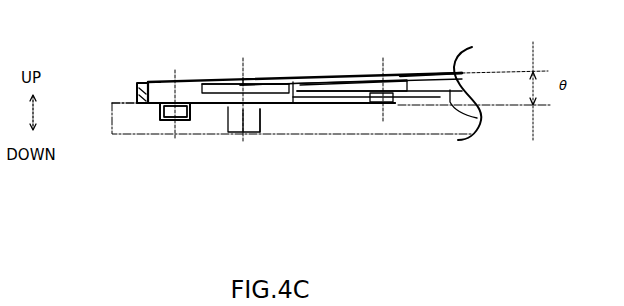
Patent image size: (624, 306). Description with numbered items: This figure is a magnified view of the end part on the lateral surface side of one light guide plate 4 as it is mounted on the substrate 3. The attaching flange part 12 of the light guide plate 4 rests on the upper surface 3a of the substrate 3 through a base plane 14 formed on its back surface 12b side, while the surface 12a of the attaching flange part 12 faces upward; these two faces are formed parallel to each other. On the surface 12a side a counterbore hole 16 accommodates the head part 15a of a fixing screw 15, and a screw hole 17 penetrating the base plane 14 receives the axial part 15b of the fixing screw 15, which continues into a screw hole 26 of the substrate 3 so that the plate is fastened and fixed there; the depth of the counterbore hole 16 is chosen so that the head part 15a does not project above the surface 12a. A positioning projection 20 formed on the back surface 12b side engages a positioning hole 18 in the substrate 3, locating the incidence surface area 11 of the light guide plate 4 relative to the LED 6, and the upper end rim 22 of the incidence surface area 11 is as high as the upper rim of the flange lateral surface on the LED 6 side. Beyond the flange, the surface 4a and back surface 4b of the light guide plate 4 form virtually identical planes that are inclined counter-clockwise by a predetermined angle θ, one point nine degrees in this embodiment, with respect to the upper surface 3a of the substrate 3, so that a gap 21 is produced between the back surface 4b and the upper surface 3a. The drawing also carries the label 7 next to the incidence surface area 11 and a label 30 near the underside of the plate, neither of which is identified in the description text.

The substrate 3 is at (137, 135).
The upper surface of substrate 3a is at (114, 100).
The light guide plate 4 is at (415, 73).
The surface of light guide plate 4a is at (432, 73).
The back surface of light guide plate 4b is at (483, 118).
The LED 6 is at (136, 96).
The housing 7 is at (136, 90).
The incidence surface area 11 is at (235, 77).
The attaching flange part 12 is at (308, 88).
The surface of attaching flange part 12a is at (353, 76).
The back surface of attaching flange part 12b is at (294, 105).
The base plane 14 is at (377, 138).
The fixing screw 15 is at (226, 115).
The head part 15a is at (270, 80).
The axial part 15b is at (243, 122).
The counterbore hole 16 is at (268, 87).
The screw hole 17 is at (236, 82).
The positioning hole 18 is at (168, 106).
The positioning projection 20 is at (182, 109).
The gap 21 is at (462, 91).
The upper end rim 22 is at (147, 82).
The screw hole of substrate 26 is at (261, 121).
The stopper 30 is at (394, 100).